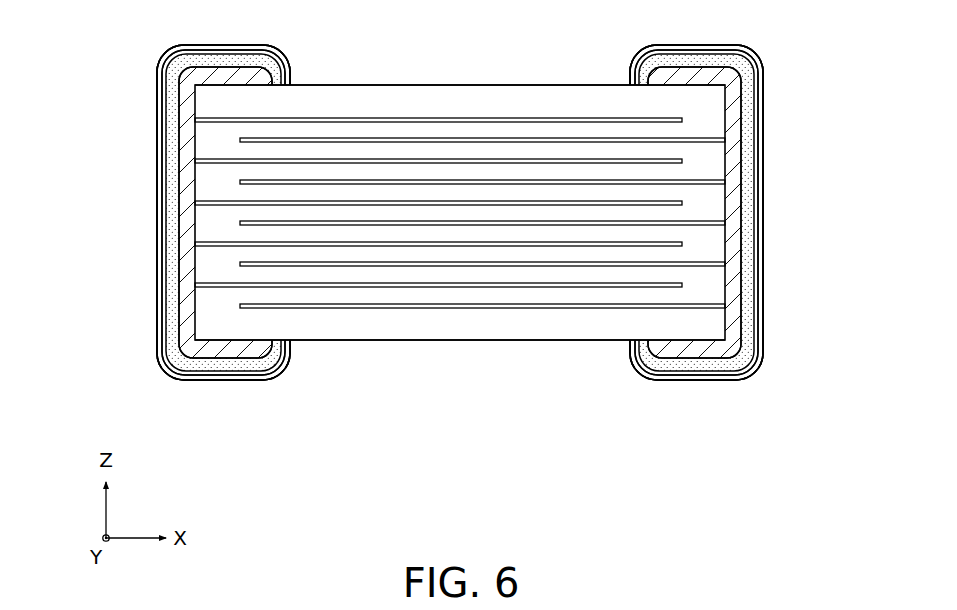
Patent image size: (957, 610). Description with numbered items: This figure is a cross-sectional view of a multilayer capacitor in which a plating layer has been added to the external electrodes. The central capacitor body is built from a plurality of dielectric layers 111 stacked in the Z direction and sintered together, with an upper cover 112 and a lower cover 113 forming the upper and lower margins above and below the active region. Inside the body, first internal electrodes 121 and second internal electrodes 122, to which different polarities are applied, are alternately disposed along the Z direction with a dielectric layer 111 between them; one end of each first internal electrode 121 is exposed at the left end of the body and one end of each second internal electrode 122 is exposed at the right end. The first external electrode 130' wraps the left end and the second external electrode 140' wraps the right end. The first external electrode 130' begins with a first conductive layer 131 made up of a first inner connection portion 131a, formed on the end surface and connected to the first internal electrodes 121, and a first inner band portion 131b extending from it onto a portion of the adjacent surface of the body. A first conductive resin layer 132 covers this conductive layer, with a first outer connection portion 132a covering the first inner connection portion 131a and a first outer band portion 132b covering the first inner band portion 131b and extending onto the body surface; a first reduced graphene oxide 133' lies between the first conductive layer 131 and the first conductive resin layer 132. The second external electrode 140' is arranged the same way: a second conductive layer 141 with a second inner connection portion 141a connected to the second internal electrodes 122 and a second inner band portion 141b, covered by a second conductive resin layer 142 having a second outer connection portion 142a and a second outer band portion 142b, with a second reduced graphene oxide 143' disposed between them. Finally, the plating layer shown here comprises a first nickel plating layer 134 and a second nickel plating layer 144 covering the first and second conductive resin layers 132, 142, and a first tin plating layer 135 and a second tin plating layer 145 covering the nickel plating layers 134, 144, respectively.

The dielectric layer 111 is at (703, 292).
The upper cover 112 is at (563, 98).
The lower cover 113 is at (500, 341).
The first internal electrode 121 is at (428, 118).
The second internal electrode 122 is at (488, 138).
The first external electrode 130' is at (155, 212).
The first conductive layer 131 is at (192, 212).
The first inner connection portion 131a is at (198, 316).
The first inner band portion 131b is at (245, 350).
The first conductive resin layer 132 is at (160, 161).
The first outer connection portion 132a is at (158, 338).
The first outer band portion 132b is at (218, 373).
The first reduced graphene oxide 133' is at (181, 212).
The first nickel plating layer 134 is at (163, 93).
The first tin plating layer 135 is at (158, 110).
The second external electrode 140' is at (766, 212).
The second conductive layer 141 is at (733, 213).
The second inner connection portion 141a is at (722, 316).
The second inner band portion 141b is at (675, 350).
The second conductive resin layer 142 is at (760, 158).
The second outer connection portion 142a is at (762, 338).
The second outer band portion 142b is at (702, 373).
The second reduced graphene oxide 143' is at (742, 212).
The second nickel plating layer 144 is at (760, 92).
The second tin plating layer 145 is at (766, 113).